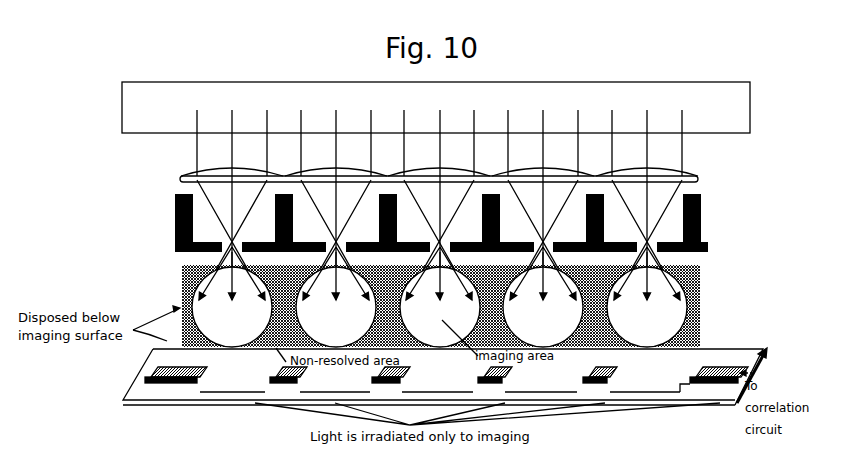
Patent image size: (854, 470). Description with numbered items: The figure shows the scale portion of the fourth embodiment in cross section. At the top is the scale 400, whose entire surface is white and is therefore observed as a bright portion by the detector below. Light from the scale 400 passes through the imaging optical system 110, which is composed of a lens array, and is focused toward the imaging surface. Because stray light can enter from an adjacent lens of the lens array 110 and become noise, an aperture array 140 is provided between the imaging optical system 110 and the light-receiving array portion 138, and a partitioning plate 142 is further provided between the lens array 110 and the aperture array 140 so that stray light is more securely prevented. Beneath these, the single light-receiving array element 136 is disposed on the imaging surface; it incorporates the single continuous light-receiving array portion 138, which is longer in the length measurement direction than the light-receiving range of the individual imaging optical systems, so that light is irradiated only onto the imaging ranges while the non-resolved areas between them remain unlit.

The scale 400 is at (122, 117).
The imaging optical system 110 is at (175, 175).
The partitioning plate 142 is at (174, 222).
The aperture array 140 is at (178, 264).
The light-receiving array element 136 is at (123, 402).
The light-receiving array portion 138 is at (172, 384).